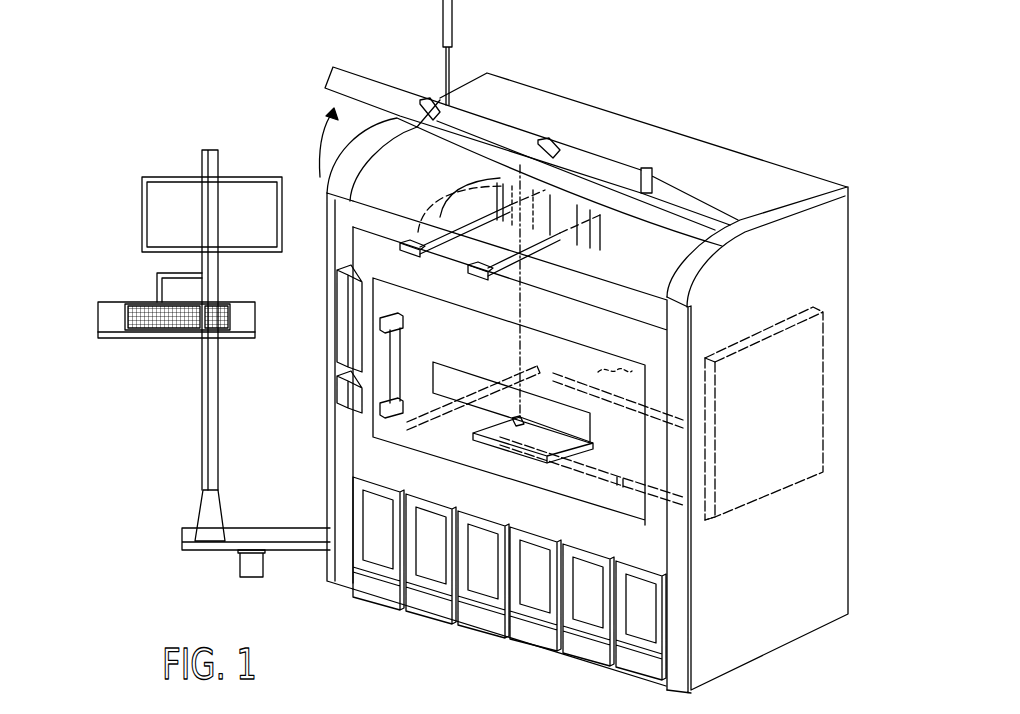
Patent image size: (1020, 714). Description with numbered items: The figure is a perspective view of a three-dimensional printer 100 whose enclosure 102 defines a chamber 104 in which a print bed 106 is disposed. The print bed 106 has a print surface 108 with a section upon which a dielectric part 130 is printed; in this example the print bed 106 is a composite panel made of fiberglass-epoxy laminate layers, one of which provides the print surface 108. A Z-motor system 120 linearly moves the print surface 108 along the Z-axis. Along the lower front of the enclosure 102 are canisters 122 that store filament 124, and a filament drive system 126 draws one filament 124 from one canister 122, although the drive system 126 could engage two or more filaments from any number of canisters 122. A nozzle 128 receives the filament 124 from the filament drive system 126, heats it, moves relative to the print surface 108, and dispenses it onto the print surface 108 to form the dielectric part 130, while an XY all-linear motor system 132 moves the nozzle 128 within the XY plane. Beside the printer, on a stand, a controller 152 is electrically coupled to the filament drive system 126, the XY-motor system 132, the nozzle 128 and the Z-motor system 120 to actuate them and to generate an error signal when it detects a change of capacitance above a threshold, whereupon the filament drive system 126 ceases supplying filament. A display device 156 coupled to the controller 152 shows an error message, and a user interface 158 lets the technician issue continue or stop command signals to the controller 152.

The three-dimensional printer 100 is at (232, 48).
The enclosure 102 is at (603, 307).
The chamber 104 is at (617, 367).
The print bed 106 is at (625, 451).
The print surface 108 is at (593, 450).
The Z-motor system 120 is at (777, 413).
The canisters 122 is at (483, 618).
The filament 124 is at (340, 412).
The filament drive system 126 is at (337, 337).
The nozzle 128 is at (542, 213).
The dielectric part 130 is at (507, 452).
The XY all-linear motor system 132 is at (420, 230).
The controller 152 is at (157, 286).
The display device 156 is at (142, 181).
The user interface 158 is at (98, 309).